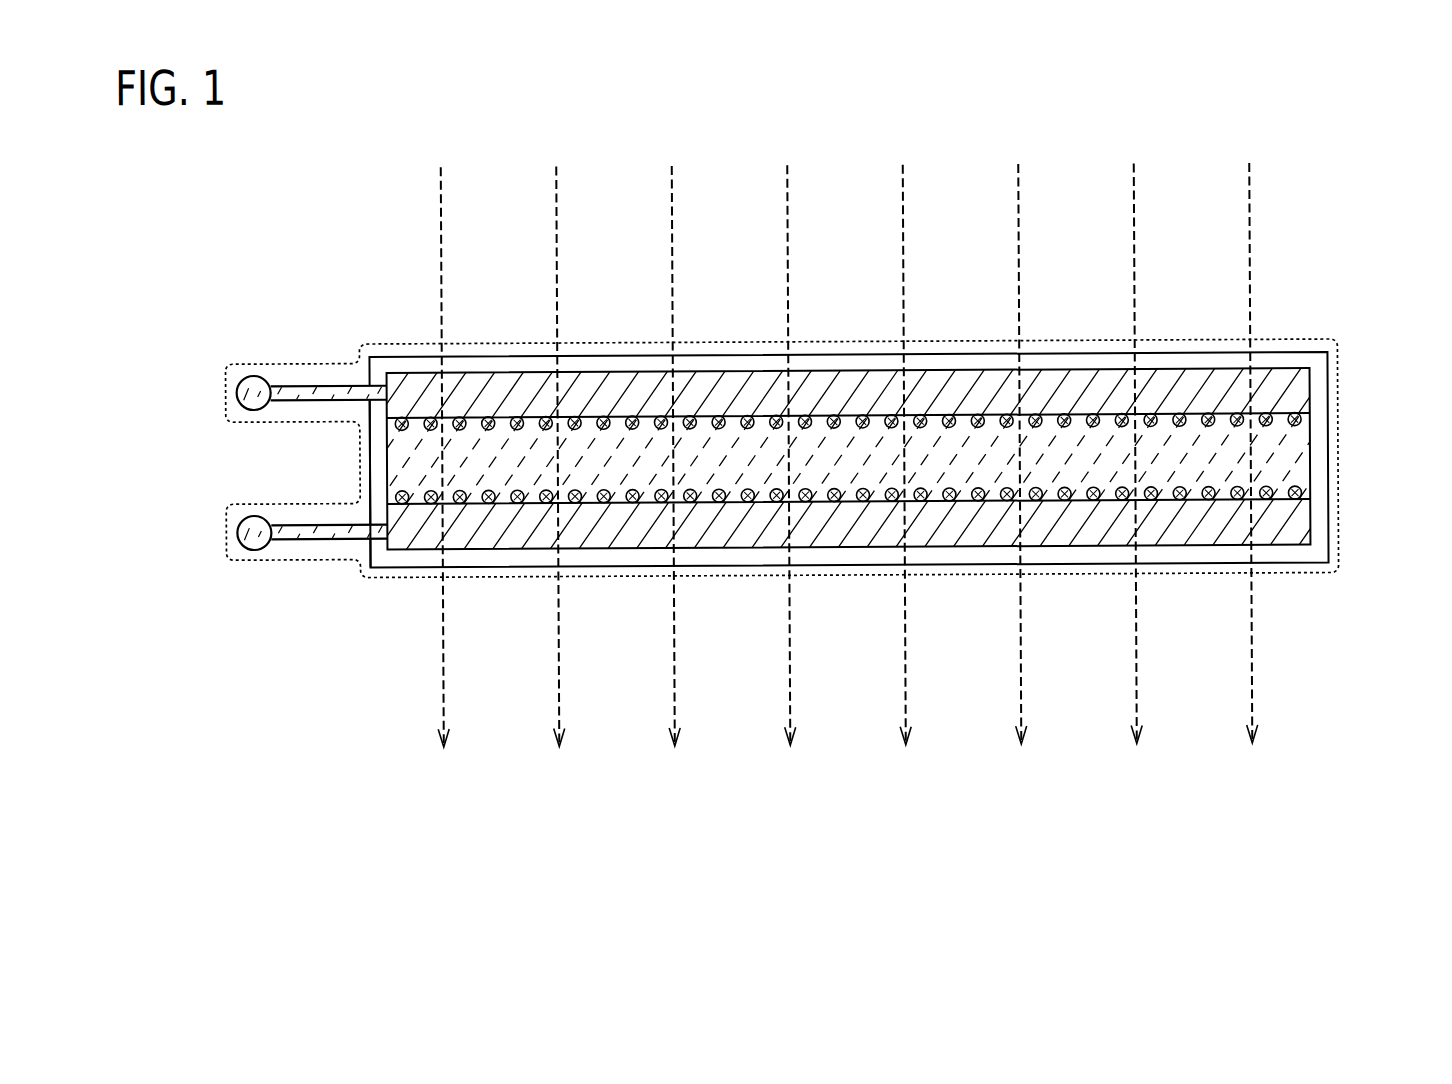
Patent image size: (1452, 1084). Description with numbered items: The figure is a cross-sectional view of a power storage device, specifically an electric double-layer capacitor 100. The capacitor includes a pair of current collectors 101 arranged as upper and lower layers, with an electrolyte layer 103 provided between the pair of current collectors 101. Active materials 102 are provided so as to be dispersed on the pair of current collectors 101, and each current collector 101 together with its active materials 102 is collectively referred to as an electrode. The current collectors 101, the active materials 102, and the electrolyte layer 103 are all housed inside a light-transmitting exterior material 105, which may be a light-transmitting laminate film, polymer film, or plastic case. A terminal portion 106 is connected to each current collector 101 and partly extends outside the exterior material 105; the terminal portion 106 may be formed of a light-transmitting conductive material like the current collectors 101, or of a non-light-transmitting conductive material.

The electric double-layer capacitor 100 is at (970, 341).
The current collector 101 is at (1302, 382).
The active material 102 is at (1300, 418).
The electrolyte layer 103 is at (1295, 457).
The exterior material 105 is at (845, 549).
The terminal portion 106 is at (237, 390).